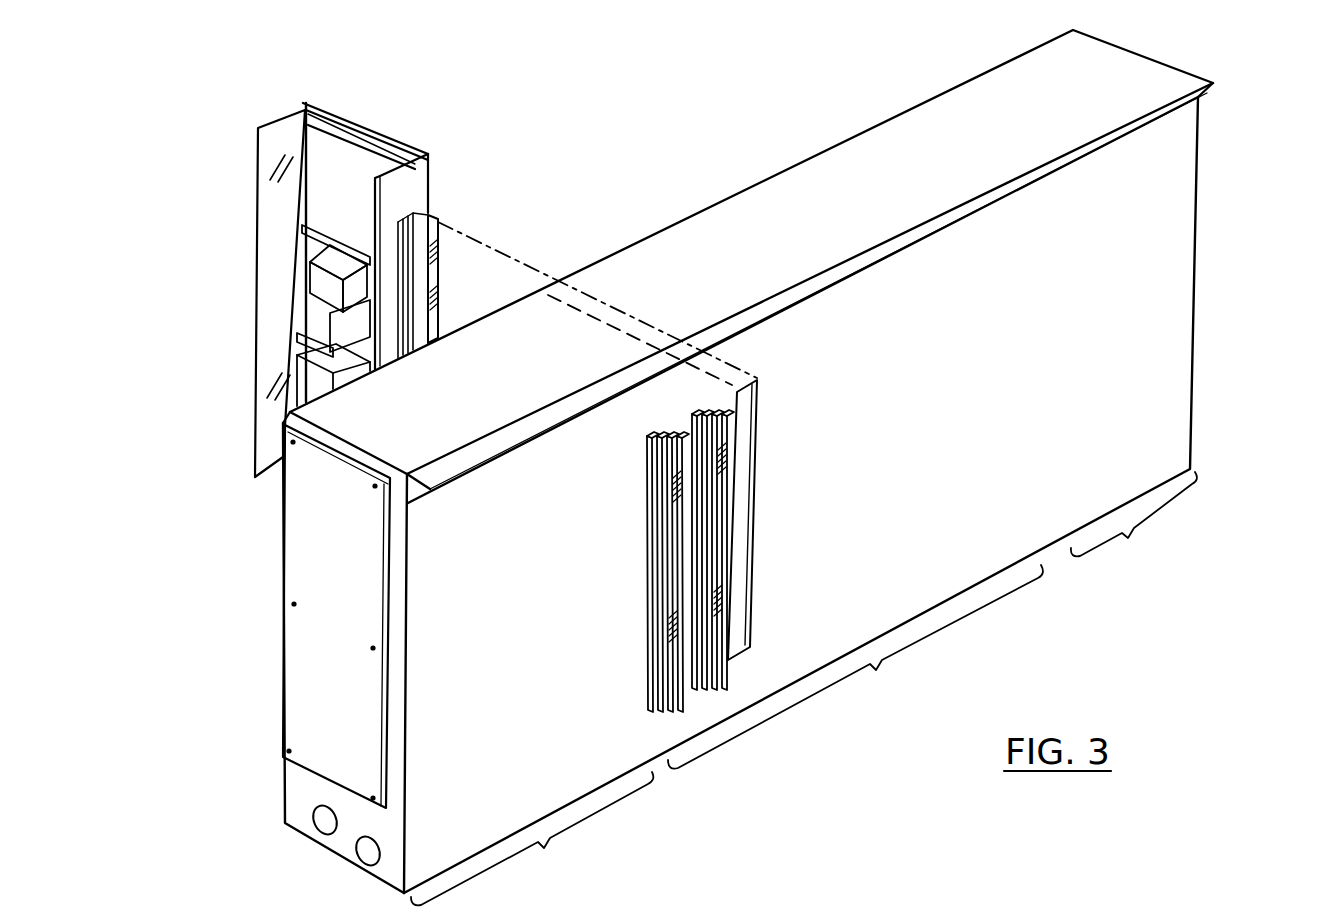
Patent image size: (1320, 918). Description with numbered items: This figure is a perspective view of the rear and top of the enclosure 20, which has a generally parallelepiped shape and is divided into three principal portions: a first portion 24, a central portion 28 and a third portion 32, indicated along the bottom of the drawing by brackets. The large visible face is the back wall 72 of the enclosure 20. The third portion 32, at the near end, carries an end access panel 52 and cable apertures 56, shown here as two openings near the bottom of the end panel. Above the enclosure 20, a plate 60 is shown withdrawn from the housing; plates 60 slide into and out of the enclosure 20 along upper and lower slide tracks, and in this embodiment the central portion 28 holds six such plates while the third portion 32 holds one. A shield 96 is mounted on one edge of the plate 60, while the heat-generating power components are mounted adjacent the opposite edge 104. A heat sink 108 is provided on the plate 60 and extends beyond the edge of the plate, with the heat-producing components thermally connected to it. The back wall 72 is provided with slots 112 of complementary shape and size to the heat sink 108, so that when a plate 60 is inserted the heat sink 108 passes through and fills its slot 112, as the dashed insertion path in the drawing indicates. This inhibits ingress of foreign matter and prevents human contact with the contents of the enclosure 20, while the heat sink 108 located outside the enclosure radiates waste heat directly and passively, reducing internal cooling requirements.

The enclosure 20 is at (1226, 236).
The first portion 24 is at (1134, 515).
The central portion 28 is at (855, 667).
The third portion 32 is at (532, 838).
The end access panel 52 is at (312, 519).
The cable apertures 56 is at (364, 864).
The plate 60 is at (411, 125).
The back wall 72 is at (1013, 377).
The shield 96 is at (287, 128).
The edge 104 is at (418, 190).
The heat sink 108 is at (433, 302).
The slot 112 is at (751, 397).